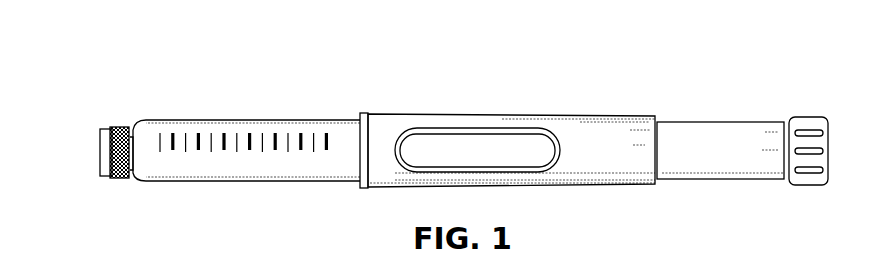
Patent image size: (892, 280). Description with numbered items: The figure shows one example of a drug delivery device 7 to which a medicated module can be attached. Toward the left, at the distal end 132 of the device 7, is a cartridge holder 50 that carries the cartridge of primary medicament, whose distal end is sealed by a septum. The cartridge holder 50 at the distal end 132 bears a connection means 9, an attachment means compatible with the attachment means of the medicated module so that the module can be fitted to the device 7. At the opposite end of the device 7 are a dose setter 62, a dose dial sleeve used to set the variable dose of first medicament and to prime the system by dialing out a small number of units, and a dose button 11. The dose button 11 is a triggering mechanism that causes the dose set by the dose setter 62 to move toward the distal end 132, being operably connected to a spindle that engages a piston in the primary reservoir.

The drug delivery device 7 is at (490, 114).
The connection means 9 is at (108, 127).
The dose button 11 is at (805, 117).
The cartridge holder 50 is at (258, 182).
The dose setter 62 is at (714, 122).
The distal end 132 is at (81, 169).